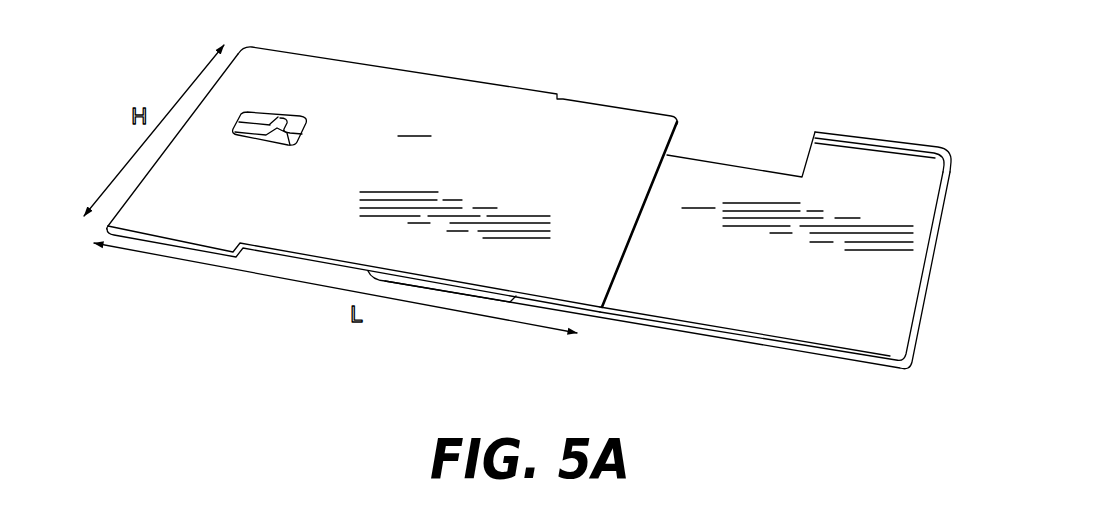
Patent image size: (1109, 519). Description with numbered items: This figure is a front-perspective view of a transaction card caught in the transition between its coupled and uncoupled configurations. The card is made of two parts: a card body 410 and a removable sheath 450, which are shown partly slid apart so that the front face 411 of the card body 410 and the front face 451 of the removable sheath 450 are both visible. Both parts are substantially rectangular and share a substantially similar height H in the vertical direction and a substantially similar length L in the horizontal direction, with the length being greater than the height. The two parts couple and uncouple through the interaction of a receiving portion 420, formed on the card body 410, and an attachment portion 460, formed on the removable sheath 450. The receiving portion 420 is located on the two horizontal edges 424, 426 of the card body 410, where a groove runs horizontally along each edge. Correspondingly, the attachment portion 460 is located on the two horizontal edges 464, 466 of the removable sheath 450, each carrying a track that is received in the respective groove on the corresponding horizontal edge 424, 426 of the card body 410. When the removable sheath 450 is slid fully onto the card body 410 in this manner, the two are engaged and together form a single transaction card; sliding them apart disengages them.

The card body 410 is at (392, 176).
The front face of the card body 411 is at (414, 126).
The receiving portion 420 is at (392, 176).
The horizontal edge of the card body 424 is at (289, 258).
The horizontal edge of the card body 426 is at (597, 110).
The removable sheath 450 is at (767, 221).
The front face of the removable sheath 451 is at (698, 198).
The attachment portion 460 is at (685, 233).
The horizontal edge of the removable sheath 464 is at (740, 332).
The horizontal edge of the removable sheath 466 is at (907, 147).